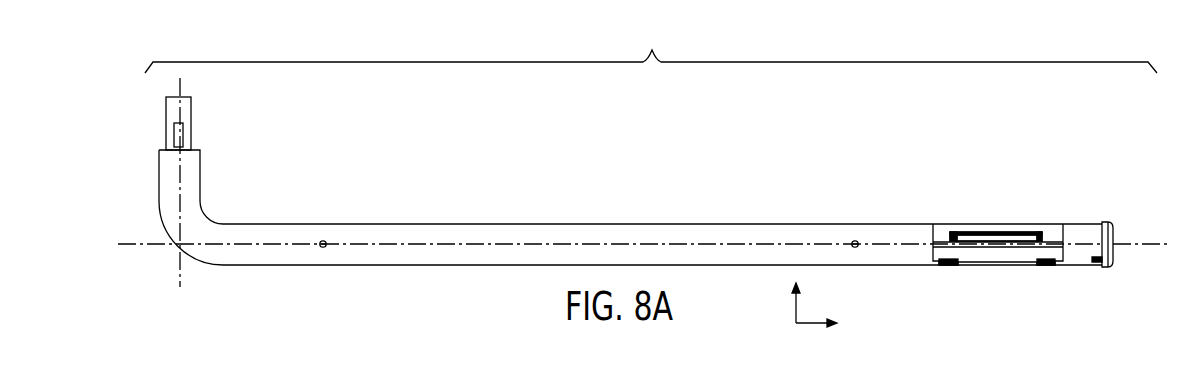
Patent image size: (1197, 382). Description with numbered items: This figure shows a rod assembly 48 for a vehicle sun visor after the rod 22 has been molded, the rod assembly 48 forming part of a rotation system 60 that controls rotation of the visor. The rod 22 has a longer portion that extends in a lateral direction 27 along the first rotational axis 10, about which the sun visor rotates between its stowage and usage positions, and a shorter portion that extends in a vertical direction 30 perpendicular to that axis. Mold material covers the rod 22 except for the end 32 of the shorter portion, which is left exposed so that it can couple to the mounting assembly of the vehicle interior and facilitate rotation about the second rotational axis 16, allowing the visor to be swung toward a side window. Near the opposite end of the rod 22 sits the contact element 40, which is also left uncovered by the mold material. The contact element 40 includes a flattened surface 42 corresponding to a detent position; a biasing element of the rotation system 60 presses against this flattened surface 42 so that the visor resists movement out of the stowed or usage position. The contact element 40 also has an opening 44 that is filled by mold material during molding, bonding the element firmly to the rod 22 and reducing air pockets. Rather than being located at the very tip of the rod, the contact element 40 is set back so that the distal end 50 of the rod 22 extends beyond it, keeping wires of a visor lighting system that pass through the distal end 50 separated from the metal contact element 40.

The first rotational axis 10 is at (1147, 243).
The second rotational axis 16 is at (180, 262).
The rod 22 is at (548, 196).
The lateral direction 27 is at (812, 320).
The vertical direction 30 is at (794, 302).
The end 32 is at (180, 97).
The contact element 40 is at (992, 266).
The flattened surface 42 is at (967, 228).
The opening 44 is at (1012, 235).
The rod assembly 48 is at (651, 49).
The distal end 50 is at (1082, 266).
The rotation system 60 is at (609, 292).